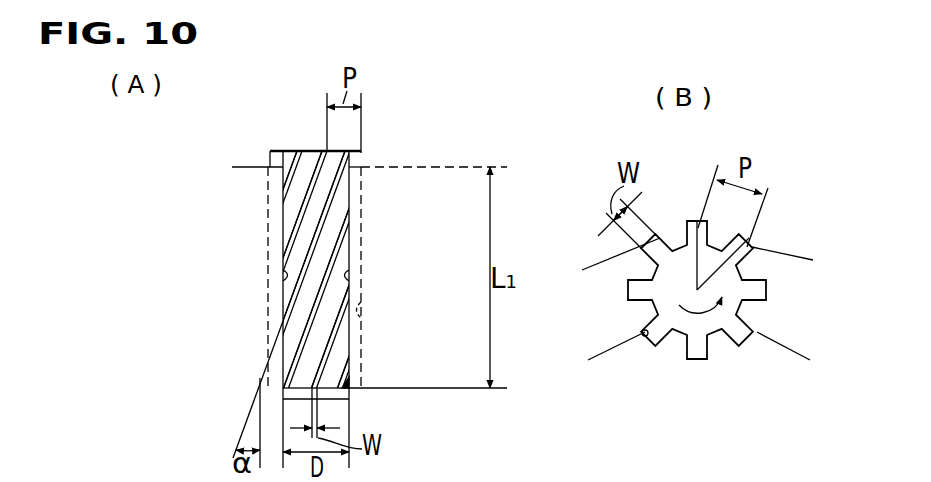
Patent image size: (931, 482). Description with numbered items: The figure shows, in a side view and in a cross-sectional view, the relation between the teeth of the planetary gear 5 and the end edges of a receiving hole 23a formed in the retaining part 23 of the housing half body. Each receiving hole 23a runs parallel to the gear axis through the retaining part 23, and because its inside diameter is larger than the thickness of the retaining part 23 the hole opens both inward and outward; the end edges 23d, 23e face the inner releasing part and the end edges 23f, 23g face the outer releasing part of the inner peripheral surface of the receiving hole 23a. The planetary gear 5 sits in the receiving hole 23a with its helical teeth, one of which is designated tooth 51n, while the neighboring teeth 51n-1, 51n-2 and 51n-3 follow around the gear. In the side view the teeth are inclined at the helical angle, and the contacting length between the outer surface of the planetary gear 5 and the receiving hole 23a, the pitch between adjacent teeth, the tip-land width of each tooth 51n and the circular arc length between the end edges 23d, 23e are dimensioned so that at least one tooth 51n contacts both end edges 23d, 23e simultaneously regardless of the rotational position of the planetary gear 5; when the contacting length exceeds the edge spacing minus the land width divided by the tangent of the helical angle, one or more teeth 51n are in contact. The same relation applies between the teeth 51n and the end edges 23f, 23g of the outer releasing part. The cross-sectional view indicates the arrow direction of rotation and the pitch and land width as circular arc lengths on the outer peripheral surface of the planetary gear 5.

The planetary gear 5 is at (305, 138).
The retaining part 23 is at (222, 181).
The receiving hole 23a is at (363, 317).
The end edge 23d is at (343, 277).
The end edge 23e is at (290, 277).
The end edge 23f is at (752, 243).
The end edge 23g is at (659, 238).
The tooth 51n is at (342, 202).
The land 51n-1 is at (362, 240).
The land 51n-2 is at (343, 350).
The land 51n-3 is at (350, 390).